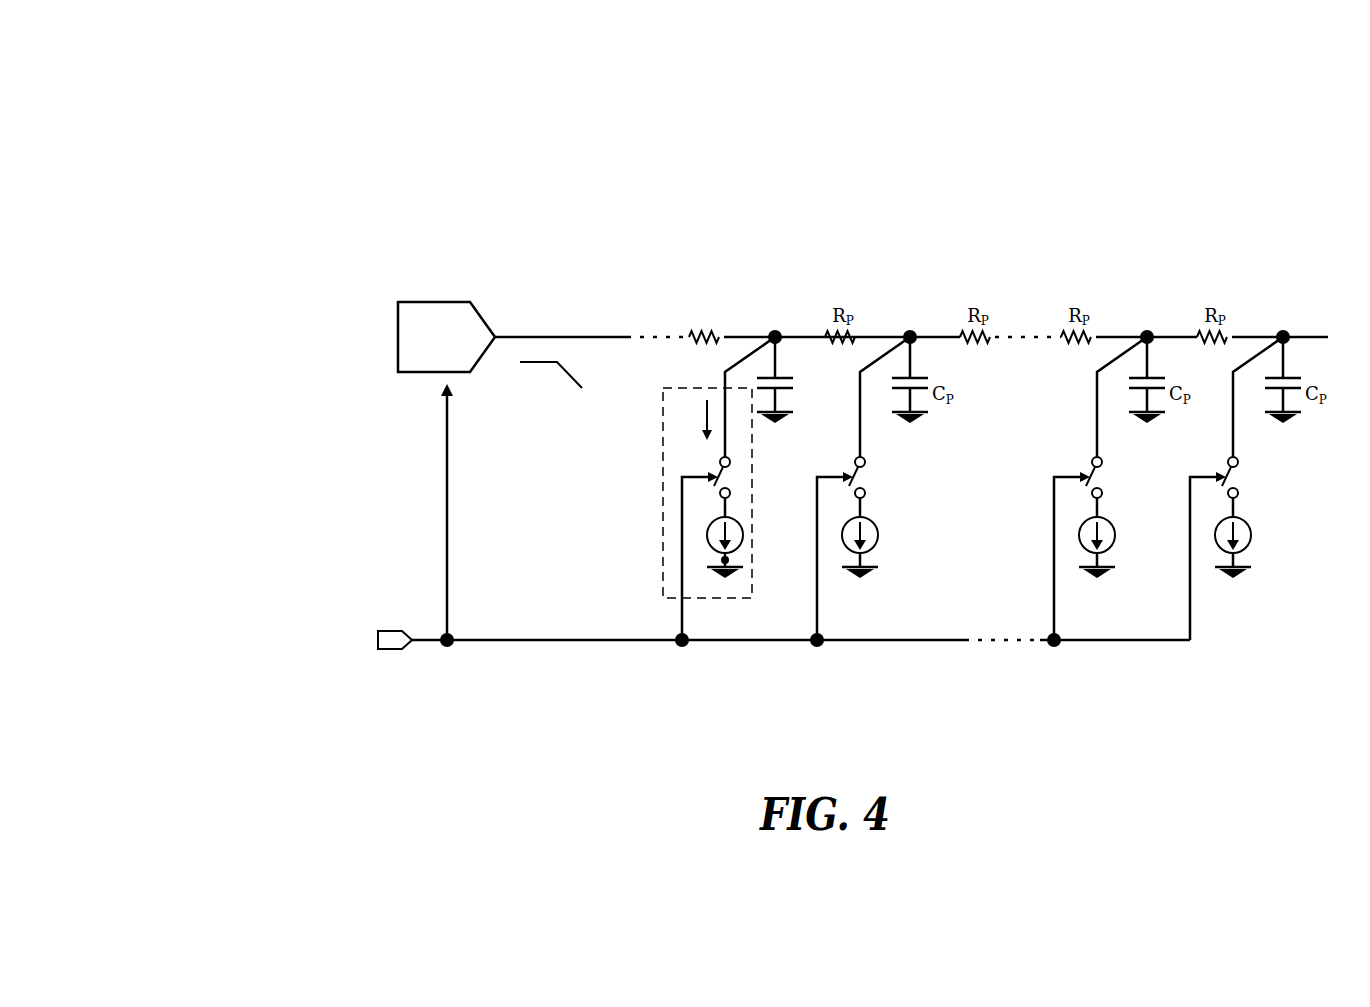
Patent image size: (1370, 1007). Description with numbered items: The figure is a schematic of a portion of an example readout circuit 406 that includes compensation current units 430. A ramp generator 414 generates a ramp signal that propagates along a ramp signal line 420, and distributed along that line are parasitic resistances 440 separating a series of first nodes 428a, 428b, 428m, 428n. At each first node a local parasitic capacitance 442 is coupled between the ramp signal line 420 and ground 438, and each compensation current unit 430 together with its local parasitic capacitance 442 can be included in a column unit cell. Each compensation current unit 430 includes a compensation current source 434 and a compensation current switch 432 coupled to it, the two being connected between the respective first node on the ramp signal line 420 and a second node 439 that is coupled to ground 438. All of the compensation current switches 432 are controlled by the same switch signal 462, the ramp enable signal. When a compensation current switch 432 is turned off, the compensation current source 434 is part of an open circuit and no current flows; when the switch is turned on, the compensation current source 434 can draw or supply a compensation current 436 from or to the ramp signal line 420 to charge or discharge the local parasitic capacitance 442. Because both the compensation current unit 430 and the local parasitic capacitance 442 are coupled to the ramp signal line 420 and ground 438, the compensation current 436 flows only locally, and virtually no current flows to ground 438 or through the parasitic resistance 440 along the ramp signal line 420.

The readout circuit 406 is at (468, 141).
The ramp generator 414 is at (440, 297).
The ramp signal line 420 is at (570, 336).
The first node 428a is at (775, 333).
The first node 428b is at (910, 333).
The first node 428m is at (1147, 333).
The first node 428n is at (1283, 333).
The compensation current unit 430 is at (686, 388).
The compensation current switch 432 is at (718, 463).
The compensation current source 434 is at (710, 528).
The current I_C 436 is at (682, 420).
The ground 438 is at (713, 571).
The second node 439 is at (722, 560).
The parasitic resistance R_P 440 is at (713, 297).
The local parasitic capacitance C_P 442 is at (793, 402).
The switch signal Ramp_en 462 is at (245, 638).